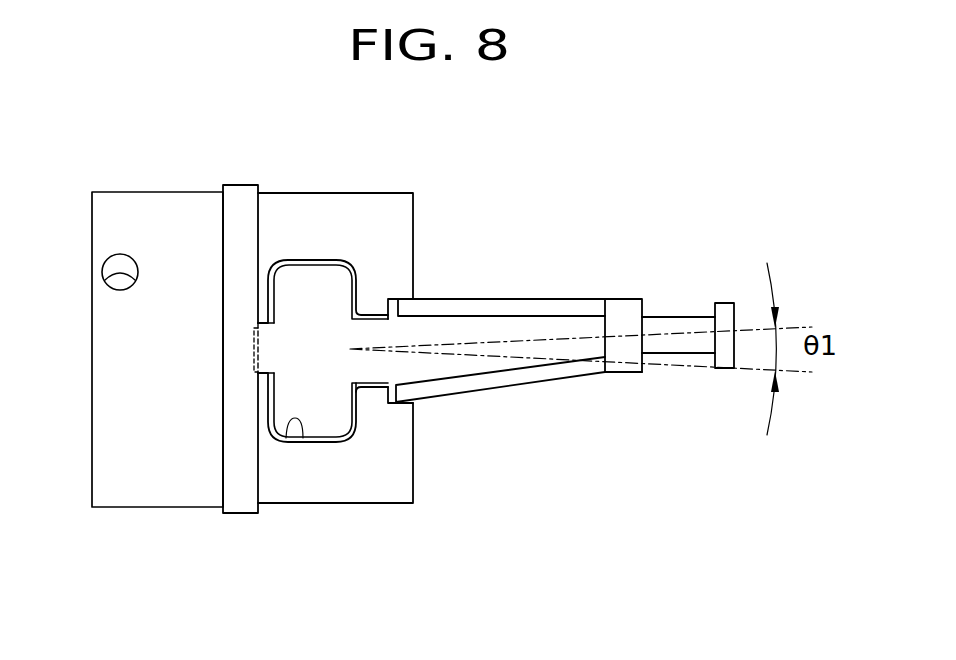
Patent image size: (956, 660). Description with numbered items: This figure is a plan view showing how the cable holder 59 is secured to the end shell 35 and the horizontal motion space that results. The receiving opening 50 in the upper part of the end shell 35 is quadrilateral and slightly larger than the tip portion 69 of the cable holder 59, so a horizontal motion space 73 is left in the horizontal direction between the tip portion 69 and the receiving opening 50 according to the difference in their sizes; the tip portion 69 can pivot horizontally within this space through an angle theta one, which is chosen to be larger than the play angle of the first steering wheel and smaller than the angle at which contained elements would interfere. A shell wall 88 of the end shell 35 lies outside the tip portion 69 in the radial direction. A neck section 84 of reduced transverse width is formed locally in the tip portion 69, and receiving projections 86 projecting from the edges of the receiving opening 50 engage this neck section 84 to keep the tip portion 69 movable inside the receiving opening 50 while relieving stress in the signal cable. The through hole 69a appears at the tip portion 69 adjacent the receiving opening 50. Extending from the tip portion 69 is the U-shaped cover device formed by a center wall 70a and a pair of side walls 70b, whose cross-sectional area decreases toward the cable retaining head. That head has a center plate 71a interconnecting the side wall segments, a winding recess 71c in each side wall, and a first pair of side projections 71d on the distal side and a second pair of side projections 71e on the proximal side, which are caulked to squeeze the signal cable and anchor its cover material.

The end shell 35 is at (306, 188).
The receiving opening 50 is at (287, 440).
The cable holder 59 is at (504, 303).
The tip portion 69 is at (317, 427).
The through hole 69a is at (265, 343).
The center wall 70a is at (472, 330).
The side walls 70b is at (528, 297).
The center plate 71a is at (678, 340).
The winding recess 71c is at (713, 303).
The first pair of side projections 71d is at (625, 375).
The second pair of side projections 71e is at (725, 369).
The horizontal motion space 73 is at (358, 390).
The neck section 84 is at (383, 368).
The receiving projections 86 is at (371, 292).
The shell wall 88 is at (325, 243).